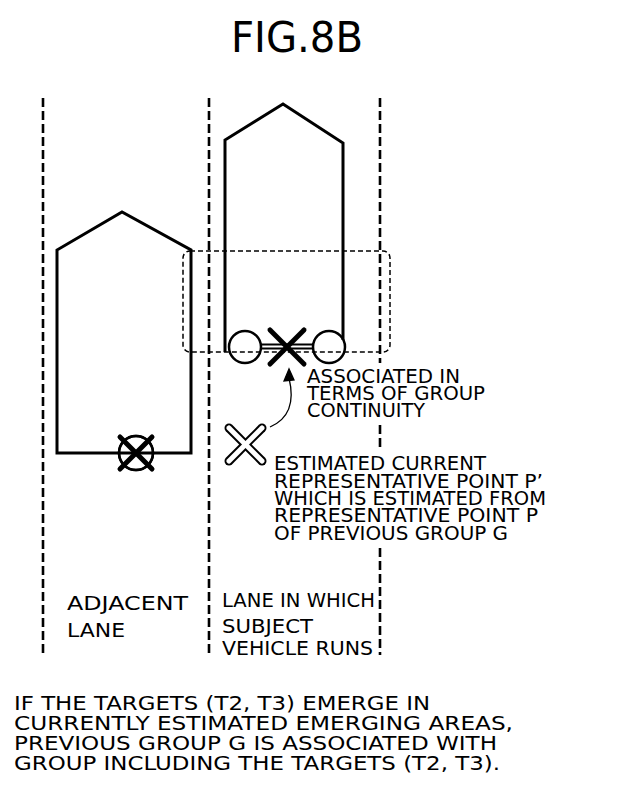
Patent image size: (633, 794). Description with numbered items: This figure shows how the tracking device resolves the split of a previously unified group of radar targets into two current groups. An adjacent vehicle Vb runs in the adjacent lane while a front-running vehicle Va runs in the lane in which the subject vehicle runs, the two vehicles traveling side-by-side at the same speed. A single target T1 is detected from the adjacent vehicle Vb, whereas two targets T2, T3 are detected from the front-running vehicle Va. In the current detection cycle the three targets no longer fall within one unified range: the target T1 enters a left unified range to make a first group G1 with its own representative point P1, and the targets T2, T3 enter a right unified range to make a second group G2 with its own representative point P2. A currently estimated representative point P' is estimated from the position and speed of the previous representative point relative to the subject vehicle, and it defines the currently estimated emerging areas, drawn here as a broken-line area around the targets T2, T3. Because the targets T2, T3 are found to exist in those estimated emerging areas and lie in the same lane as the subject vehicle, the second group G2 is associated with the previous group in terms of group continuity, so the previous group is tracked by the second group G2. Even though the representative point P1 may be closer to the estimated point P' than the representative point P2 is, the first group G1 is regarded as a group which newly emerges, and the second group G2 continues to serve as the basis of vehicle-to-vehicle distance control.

The adjacent vehicle Vb is at (108, 252).
The front-running vehicle Va is at (326, 172).
The first group G1 is at (126, 396).
The target T1 is at (121, 441).
The representative point P1 is at (152, 437).
The second group G2 is at (282, 276).
The target T2 is at (247, 338).
The representative point P2 is at (297, 338).
The target T3 is at (342, 343).
The currently estimated representative point P' is at (214, 467).